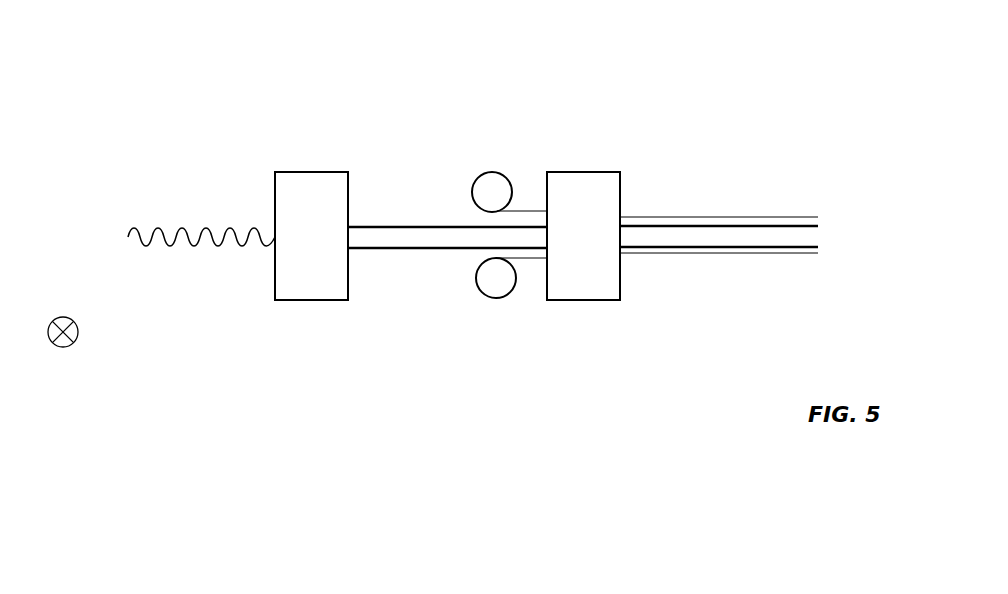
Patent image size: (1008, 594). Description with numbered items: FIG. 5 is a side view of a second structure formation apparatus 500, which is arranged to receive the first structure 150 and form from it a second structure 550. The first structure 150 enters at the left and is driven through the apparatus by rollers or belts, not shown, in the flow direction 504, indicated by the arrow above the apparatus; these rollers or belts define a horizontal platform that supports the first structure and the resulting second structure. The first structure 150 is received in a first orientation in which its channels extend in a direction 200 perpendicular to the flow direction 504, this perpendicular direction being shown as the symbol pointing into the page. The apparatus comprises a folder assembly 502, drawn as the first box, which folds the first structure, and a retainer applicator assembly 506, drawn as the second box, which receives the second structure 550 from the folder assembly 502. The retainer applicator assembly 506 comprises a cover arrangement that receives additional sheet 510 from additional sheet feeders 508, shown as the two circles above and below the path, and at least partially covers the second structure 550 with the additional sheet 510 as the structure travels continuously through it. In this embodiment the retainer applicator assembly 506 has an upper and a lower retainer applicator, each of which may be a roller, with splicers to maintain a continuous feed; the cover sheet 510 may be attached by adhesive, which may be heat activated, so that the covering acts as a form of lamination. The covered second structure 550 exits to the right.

The first structure 150 is at (163, 200).
The direction perpendicular to the flow direction 200 is at (64, 351).
The second structure formation apparatus 500 is at (663, 112).
The folder assembly 502 is at (317, 300).
The flow direction 504 is at (438, 143).
The retainer applicator assembly 506 is at (583, 300).
The additional sheet feeder 508 is at (490, 172).
The additional sheet 510 is at (528, 211).
The second structure 550 is at (773, 197).